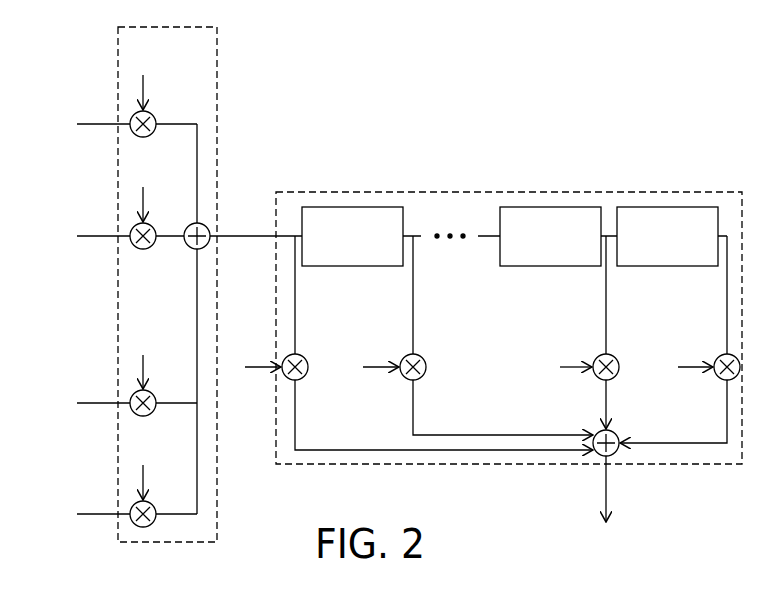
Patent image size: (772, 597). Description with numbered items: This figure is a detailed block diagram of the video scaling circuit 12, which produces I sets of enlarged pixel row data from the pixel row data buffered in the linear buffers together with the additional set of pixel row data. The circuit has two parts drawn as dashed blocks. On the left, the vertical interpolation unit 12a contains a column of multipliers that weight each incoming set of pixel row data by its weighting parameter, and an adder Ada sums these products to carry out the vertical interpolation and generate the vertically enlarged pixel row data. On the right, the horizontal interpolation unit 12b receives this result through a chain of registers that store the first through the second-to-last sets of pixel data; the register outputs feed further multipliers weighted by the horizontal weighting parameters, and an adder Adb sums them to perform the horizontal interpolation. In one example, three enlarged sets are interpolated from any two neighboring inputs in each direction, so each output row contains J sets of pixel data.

The video scaling circuit 12 is at (712, 37).
The vertical interpolation unit 12a is at (218, 62).
The horizontal interpolation unit 12b is at (465, 192).
The adder Ada is at (208, 227).
The adder Adb is at (609, 459).